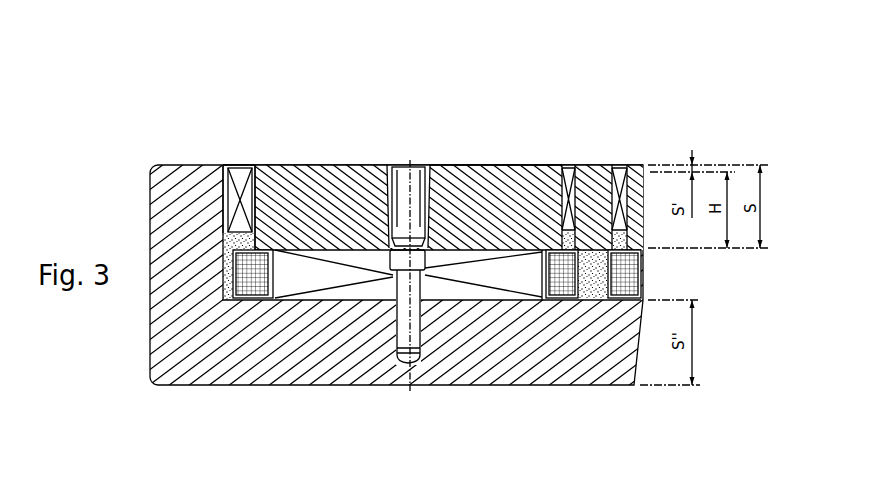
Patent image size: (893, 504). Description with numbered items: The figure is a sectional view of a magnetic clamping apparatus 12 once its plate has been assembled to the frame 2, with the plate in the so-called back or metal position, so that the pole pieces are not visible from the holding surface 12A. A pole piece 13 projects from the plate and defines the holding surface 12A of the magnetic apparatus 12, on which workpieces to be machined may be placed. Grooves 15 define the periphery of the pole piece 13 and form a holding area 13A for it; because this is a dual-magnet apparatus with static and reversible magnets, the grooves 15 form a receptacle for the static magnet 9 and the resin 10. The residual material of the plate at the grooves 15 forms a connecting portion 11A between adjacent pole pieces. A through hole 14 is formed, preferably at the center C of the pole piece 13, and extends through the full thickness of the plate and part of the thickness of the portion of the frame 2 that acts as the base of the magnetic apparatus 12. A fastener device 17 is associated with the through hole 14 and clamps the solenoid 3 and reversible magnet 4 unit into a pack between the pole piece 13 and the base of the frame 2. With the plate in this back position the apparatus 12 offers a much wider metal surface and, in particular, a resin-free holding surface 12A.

The frame 2 is at (187, 335).
The solenoid 3 is at (262, 297).
The reversible magnet 4 is at (332, 273).
The static magnet 9 is at (232, 177).
The resin 10 is at (230, 283).
The connecting portion 11A is at (242, 166).
The magnetic clamping apparatus 12 is at (446, 234).
The holding surface 12A is at (652, 162).
The pole piece 13 is at (487, 183).
The holding area 13A is at (533, 165).
The through hole 14 is at (383, 165).
The grooves 15 is at (620, 169).
The fastener device 17 is at (412, 258).
The center of pole piece C is at (408, 165).